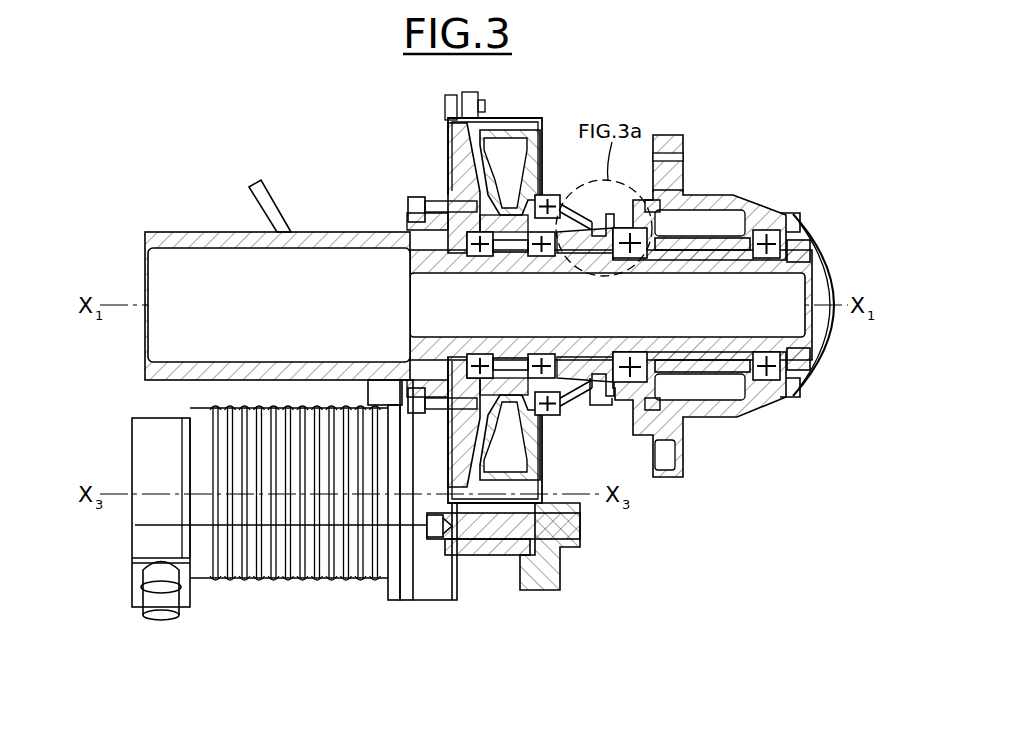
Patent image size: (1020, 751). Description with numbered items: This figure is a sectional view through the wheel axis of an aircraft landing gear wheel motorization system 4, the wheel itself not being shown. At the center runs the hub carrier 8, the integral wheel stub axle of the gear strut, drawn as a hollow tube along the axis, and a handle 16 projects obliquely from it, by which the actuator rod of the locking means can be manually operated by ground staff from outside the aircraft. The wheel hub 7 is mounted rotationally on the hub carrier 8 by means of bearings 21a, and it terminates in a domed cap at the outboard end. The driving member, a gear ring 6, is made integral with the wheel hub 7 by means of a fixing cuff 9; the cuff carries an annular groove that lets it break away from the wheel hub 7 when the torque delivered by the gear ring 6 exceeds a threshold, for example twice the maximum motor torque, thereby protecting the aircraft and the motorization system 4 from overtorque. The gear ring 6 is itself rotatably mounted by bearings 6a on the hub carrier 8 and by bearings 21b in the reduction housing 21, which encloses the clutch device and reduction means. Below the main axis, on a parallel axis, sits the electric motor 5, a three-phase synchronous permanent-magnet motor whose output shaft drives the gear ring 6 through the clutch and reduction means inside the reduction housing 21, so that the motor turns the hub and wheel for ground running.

The motorization system 4 is at (734, 96).
The electric motor 5 is at (290, 580).
The gear ring 6 is at (494, 140).
The bearings 6a is at (428, 198).
The wheel hub 7 is at (722, 193).
The hub carrier 8 is at (190, 232).
The fixing cuff 9 is at (610, 392).
The handle 16 is at (257, 180).
The reduction housing 21 is at (520, 118).
The bearings 21a is at (650, 205).
The bearings 21b is at (553, 185).